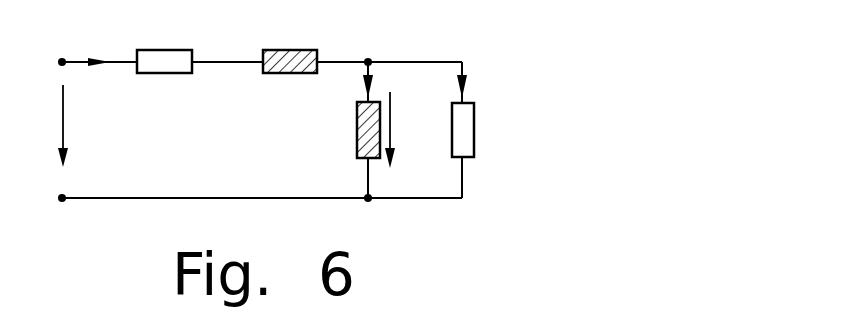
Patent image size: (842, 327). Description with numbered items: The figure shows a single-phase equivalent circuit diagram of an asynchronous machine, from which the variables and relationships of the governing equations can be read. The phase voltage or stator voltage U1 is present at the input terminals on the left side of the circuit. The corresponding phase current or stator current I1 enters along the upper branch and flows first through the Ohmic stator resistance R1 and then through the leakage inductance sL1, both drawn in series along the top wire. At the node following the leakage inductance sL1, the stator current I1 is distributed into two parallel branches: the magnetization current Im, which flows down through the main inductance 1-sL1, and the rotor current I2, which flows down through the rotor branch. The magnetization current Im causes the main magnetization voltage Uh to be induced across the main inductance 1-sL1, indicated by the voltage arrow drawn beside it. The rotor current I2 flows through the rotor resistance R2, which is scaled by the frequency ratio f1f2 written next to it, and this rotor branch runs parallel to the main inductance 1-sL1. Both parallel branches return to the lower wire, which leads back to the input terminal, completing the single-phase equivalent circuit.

The stator current I1 is at (103, 36).
The Ohmic stator resistance R1 is at (164, 40).
The leakage inductance sL1 is at (291, 40).
The magnetization current Im is at (369, 68).
The main inductance 1-sL1 is at (317, 130).
The main magnetization voltage Uh is at (407, 130).
The rotor current I2 is at (481, 68).
The rotor resistance R2 is at (482, 130).
The frequency ratio f1f2 is at (568, 131).
The stator voltage U1 is at (82, 126).